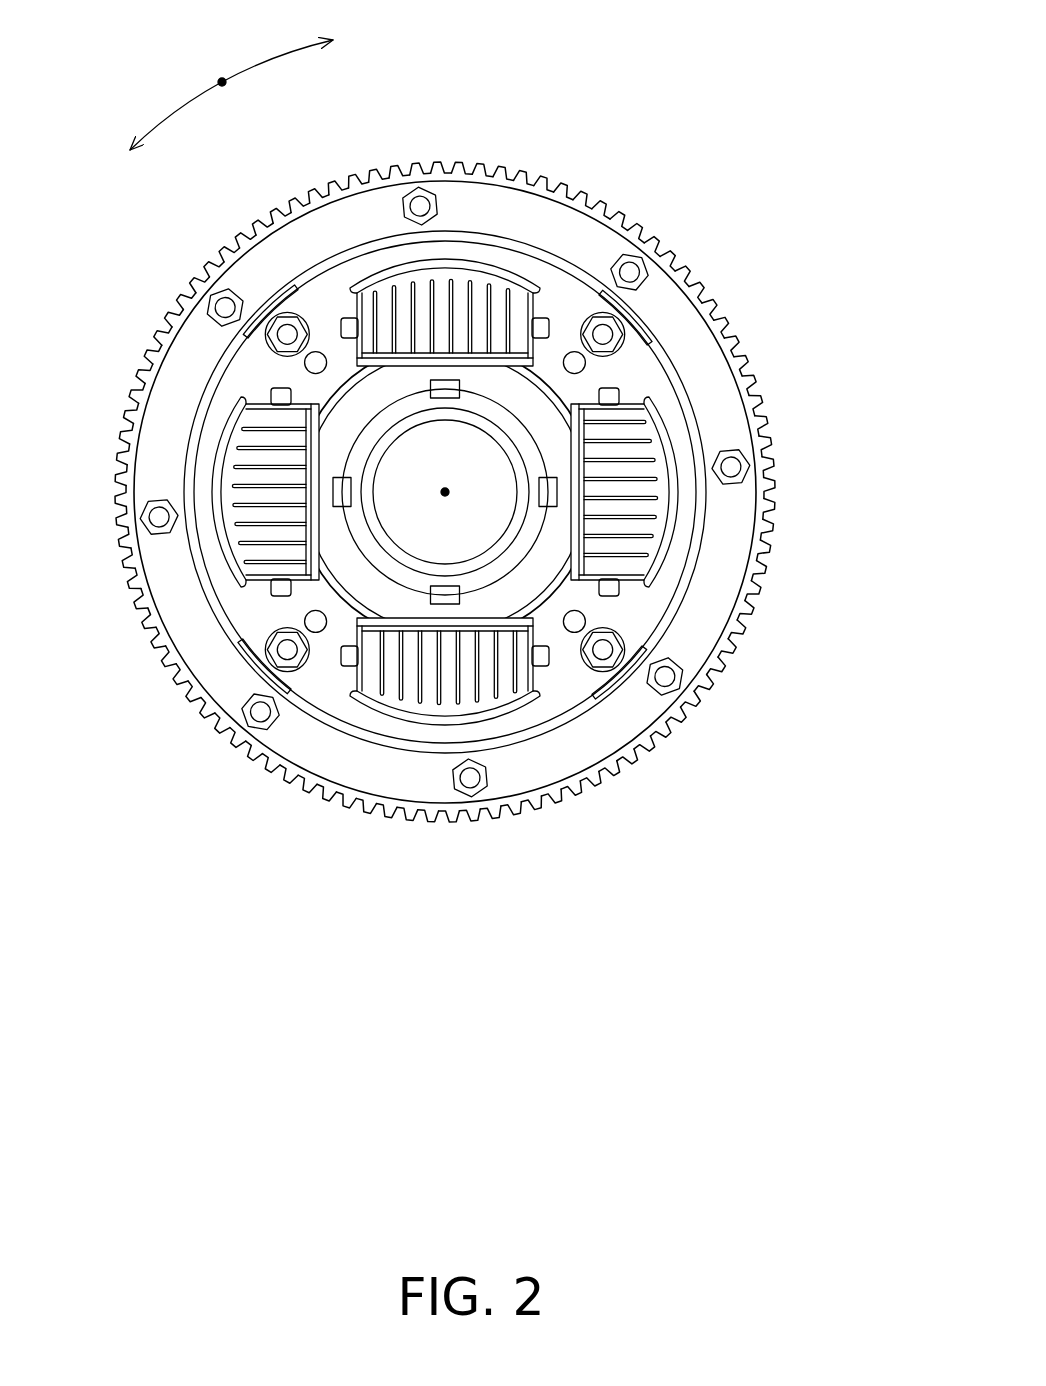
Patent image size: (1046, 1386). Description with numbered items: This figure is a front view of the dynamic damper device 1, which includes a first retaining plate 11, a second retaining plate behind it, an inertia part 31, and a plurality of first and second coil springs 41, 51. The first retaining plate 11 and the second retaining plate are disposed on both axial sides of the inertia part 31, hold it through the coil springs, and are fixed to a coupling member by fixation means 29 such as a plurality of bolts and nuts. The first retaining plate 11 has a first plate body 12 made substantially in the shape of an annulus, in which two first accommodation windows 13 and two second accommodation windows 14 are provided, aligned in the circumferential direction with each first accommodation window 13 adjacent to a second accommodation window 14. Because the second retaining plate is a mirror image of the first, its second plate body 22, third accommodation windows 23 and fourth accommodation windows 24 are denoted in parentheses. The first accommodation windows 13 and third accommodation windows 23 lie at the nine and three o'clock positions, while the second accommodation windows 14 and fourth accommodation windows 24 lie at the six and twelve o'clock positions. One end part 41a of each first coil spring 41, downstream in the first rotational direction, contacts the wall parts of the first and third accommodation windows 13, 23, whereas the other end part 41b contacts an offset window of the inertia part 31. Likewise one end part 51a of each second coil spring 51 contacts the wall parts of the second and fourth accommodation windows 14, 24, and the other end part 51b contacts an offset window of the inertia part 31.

The dynamic damper device 1 is at (461, 461).
The first retaining plate 11 is at (677, 388).
The first plate body 12 is at (531, 501).
The second plate body 22 is at (648, 608).
The first accommodation window 13 is at (461, 507).
The third accommodation window 23 is at (214, 438).
The second accommodation window 14 is at (418, 495).
The fourth accommodation window 24 is at (380, 263).
The fixation means 29 is at (590, 683).
The inertia part 31 is at (251, 783).
The first coil spring 41 is at (642, 458).
The one end part of first coil spring 41a is at (288, 575).
The other end part of first coil spring 41b is at (283, 418).
The second coil spring 51 is at (463, 290).
The one end part of second coil spring 51a is at (360, 650).
The other end part of second coil spring 51b is at (518, 653).